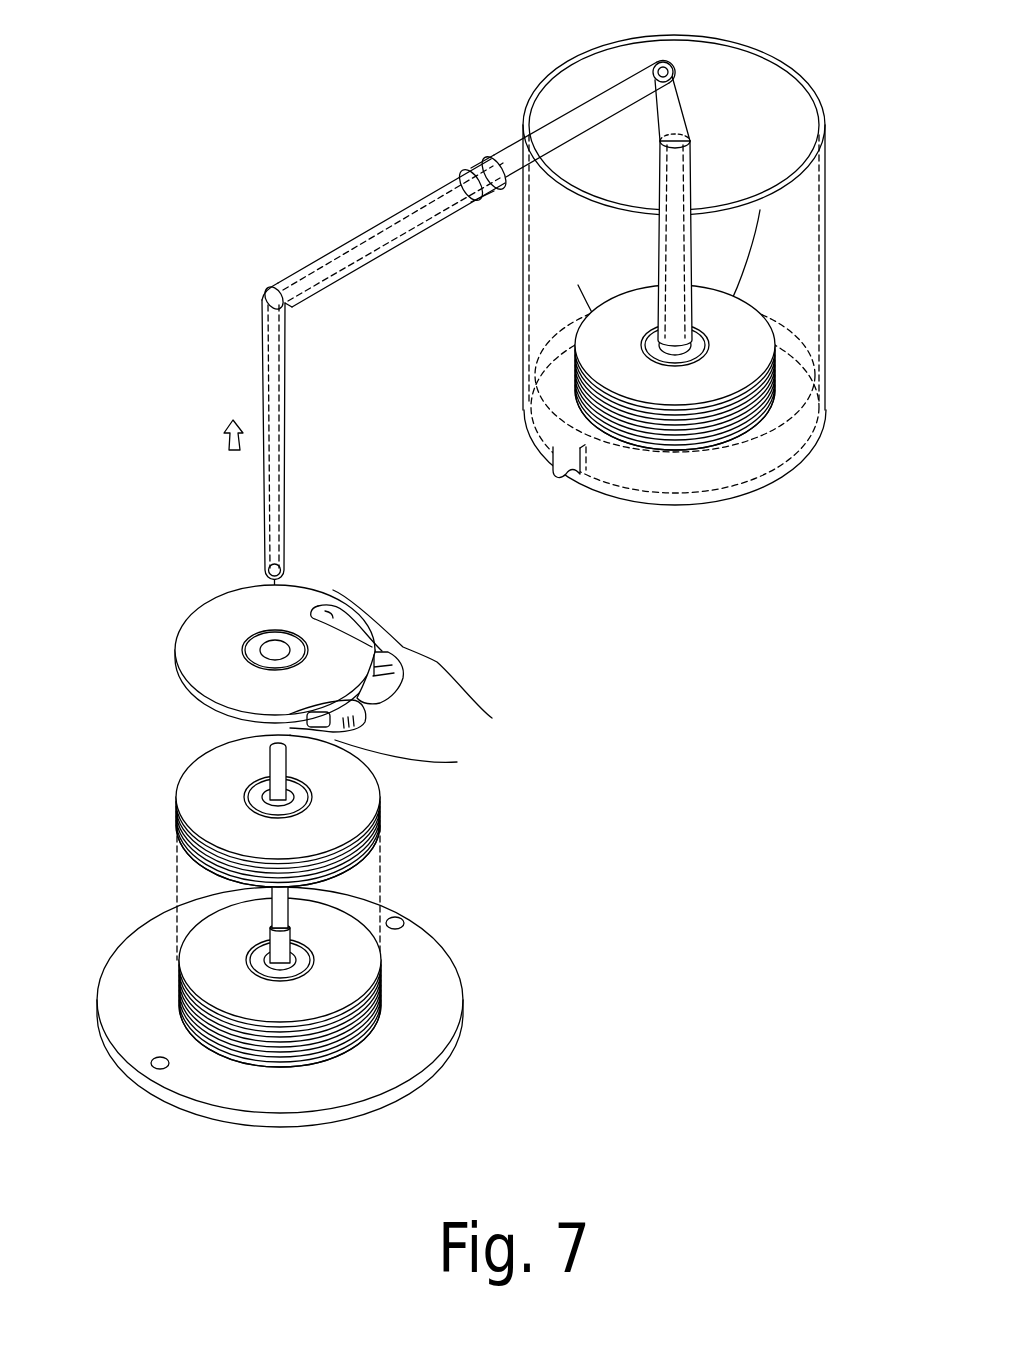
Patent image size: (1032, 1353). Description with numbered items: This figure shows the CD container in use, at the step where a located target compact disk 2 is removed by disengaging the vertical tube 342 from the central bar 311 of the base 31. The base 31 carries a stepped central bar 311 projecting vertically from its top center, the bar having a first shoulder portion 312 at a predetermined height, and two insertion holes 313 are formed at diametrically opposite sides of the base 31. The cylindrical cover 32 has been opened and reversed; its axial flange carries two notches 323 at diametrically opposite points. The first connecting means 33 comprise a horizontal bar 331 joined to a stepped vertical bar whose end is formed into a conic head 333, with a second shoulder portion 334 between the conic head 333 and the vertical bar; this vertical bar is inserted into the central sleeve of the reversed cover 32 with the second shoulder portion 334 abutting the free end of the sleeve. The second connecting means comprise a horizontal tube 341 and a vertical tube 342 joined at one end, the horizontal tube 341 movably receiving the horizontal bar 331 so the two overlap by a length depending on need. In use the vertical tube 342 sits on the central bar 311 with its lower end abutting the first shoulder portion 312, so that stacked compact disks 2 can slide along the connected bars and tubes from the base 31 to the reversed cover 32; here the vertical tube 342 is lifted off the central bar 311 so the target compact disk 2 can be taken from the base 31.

The compact disk 2 is at (178, 655).
The base 31 is at (450, 968).
The stepped central bar 311 is at (280, 943).
The first shoulder portion 312 is at (288, 928).
The insertion holes 313 is at (395, 923).
The cylindrical cover 32 is at (827, 298).
The notches 323 is at (572, 470).
The first connecting means 33 is at (482, 330).
The horizontal bar 331 is at (512, 145).
The conic head 333 is at (693, 116).
The second shoulder portion 334 is at (660, 160).
The horizontal tube 341 is at (352, 238).
The vertical tube 342 is at (262, 378).